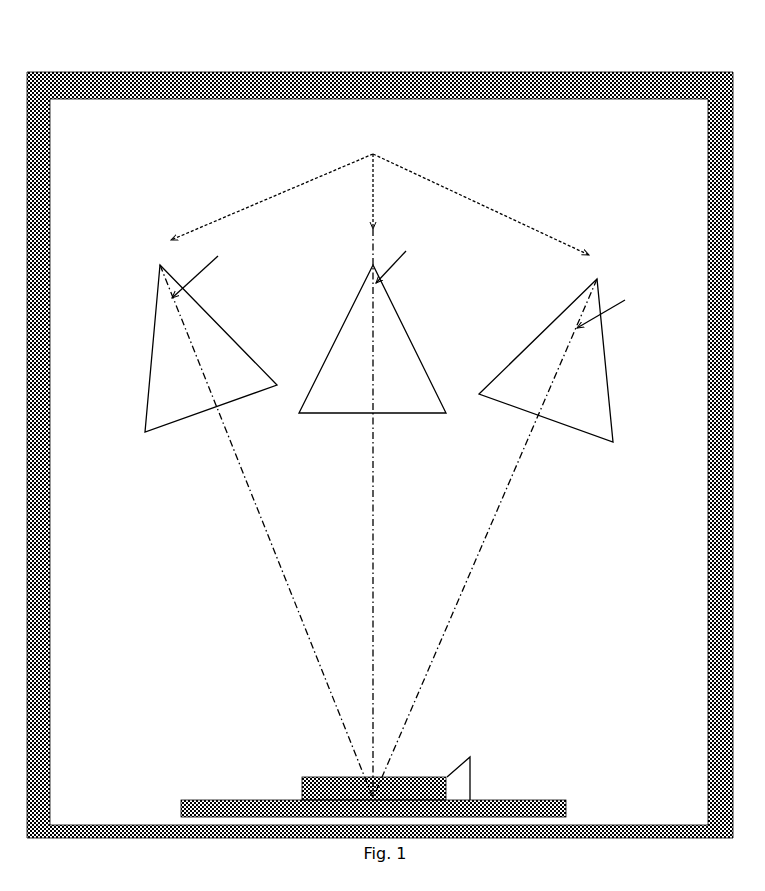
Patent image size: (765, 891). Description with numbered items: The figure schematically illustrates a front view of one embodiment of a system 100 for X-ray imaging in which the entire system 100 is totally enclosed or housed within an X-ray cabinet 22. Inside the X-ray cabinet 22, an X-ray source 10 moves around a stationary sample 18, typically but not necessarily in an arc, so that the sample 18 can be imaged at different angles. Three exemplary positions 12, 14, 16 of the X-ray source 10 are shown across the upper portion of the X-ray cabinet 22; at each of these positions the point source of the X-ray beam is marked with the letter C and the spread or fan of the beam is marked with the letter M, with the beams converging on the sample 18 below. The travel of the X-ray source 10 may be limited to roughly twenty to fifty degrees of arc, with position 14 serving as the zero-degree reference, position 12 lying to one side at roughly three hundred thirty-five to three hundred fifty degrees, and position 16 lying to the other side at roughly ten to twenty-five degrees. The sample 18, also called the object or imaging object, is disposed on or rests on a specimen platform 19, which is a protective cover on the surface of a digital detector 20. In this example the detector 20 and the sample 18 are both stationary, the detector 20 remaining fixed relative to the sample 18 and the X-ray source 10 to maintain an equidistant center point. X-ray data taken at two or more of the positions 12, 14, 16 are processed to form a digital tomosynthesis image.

The system 100 is at (380, 424).
The X-ray source 10 is at (380, 189).
The position of the X-ray source 12 is at (258, 519).
The position of the X-ray source 14 is at (380, 513).
The position of the X-ray source 16 is at (505, 526).
The sample 18 is at (302, 777).
The specimen platform 19 is at (474, 768).
The detector 20 is at (566, 800).
The X-ray cabinet 22 is at (50, 609).